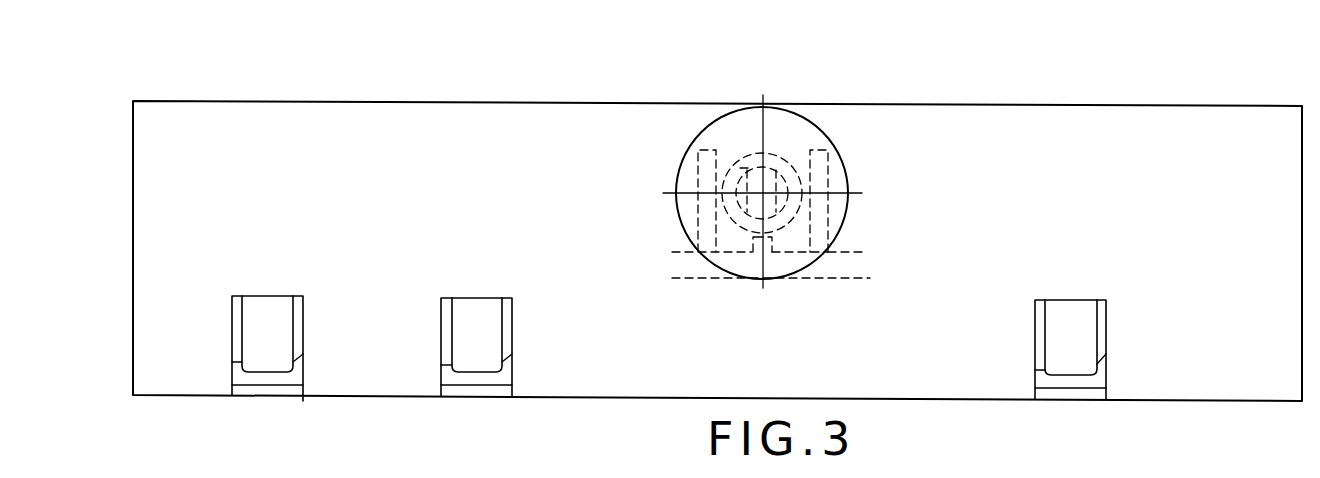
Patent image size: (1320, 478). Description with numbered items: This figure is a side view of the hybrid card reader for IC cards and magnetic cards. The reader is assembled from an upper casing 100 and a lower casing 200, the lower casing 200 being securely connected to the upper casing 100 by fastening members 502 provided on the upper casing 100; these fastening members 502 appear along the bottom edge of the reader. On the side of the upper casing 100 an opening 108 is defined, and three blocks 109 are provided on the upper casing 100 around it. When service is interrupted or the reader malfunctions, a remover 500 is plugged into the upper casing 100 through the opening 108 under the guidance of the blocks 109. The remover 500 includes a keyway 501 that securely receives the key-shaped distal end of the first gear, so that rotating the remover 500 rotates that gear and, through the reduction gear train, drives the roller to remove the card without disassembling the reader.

The upper casing 100 is at (1150, 112).
The remover 500 is at (812, 132).
The keyway 501 is at (745, 168).
The opening 108 is at (803, 182).
The blocks 109 is at (699, 150).
The fastening members 502 is at (266, 357).
The lower casing 200 is at (1080, 386).